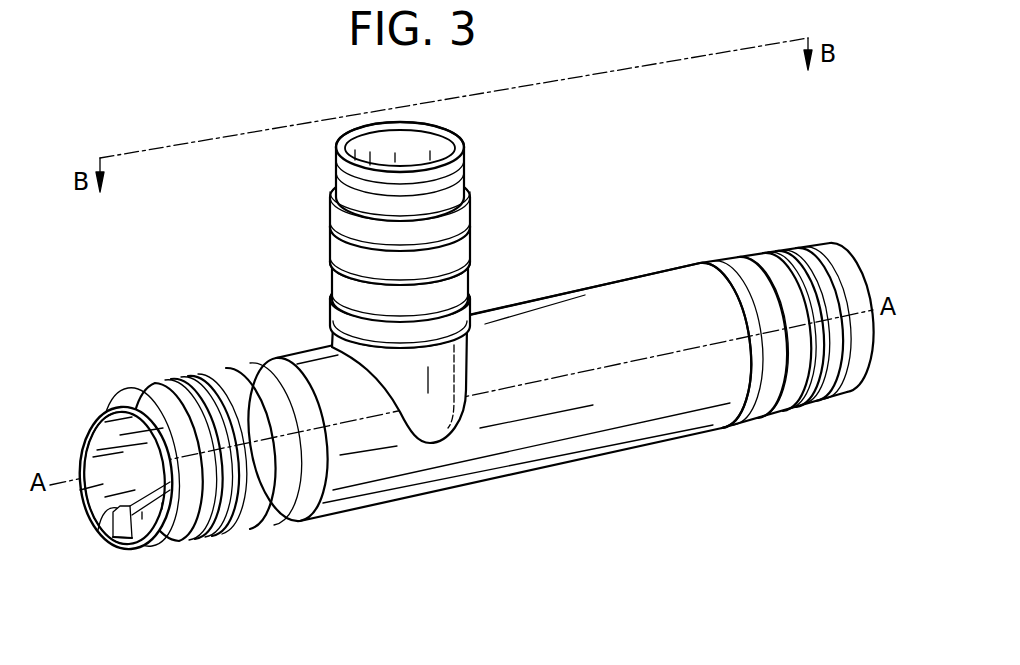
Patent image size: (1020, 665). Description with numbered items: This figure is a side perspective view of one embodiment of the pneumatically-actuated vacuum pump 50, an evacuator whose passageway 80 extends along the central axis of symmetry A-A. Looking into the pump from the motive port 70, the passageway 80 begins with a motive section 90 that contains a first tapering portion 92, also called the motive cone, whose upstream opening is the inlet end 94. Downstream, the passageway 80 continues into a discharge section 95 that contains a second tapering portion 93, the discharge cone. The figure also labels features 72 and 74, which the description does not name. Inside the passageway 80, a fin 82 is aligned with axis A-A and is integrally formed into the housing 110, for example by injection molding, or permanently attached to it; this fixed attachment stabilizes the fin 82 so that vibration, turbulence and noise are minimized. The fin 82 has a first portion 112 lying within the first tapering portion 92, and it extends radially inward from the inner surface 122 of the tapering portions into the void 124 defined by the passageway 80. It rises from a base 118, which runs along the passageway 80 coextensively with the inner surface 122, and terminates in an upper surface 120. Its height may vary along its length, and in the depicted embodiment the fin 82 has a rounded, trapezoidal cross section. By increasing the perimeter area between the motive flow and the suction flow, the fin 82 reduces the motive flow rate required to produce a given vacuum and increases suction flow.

The pneumatically-actuated vacuum pump 50 is at (647, 234).
The motive port 70 is at (97, 447).
The branch port 72 is at (435, 137).
The second end 74 is at (858, 280).
The passageway 80 is at (110, 440).
The fin 82 is at (110, 515).
The motive section 90 is at (115, 402).
The first tapering portion 92 is at (110, 423).
The second tapering portion 93 is at (637, 430).
The inlet end 94 is at (83, 455).
The discharge section 95 is at (725, 265).
The housing 110 is at (506, 322).
The first portion 112 is at (157, 510).
The base 118 is at (127, 542).
The upper surface 120 is at (125, 502).
The inner surface 122 is at (110, 530).
The void 124 is at (152, 438).